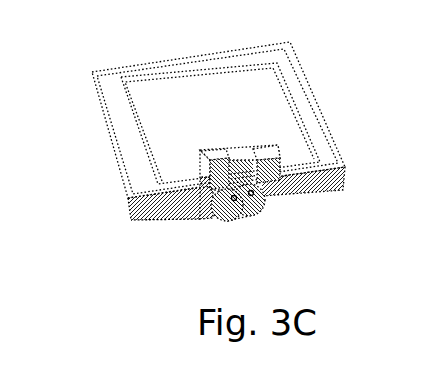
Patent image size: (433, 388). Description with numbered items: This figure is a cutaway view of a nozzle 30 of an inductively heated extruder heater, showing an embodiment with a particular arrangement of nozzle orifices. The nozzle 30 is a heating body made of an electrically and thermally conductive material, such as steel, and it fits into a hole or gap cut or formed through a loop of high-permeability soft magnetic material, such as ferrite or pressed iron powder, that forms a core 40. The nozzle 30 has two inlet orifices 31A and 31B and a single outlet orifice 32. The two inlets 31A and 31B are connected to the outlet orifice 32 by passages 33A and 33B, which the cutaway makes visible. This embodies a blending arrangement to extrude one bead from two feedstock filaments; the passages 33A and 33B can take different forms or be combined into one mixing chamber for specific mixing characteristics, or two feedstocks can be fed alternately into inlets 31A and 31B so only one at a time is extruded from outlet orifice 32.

The core 40 is at (92, 72).
The nozzle 30 is at (203, 218).
The inlet orifice 31A is at (220, 157).
The inlet orifice 31B is at (260, 150).
The outlet orifice 32 is at (241, 226).
The passage 33A is at (233, 198).
The passage 33B is at (252, 193).